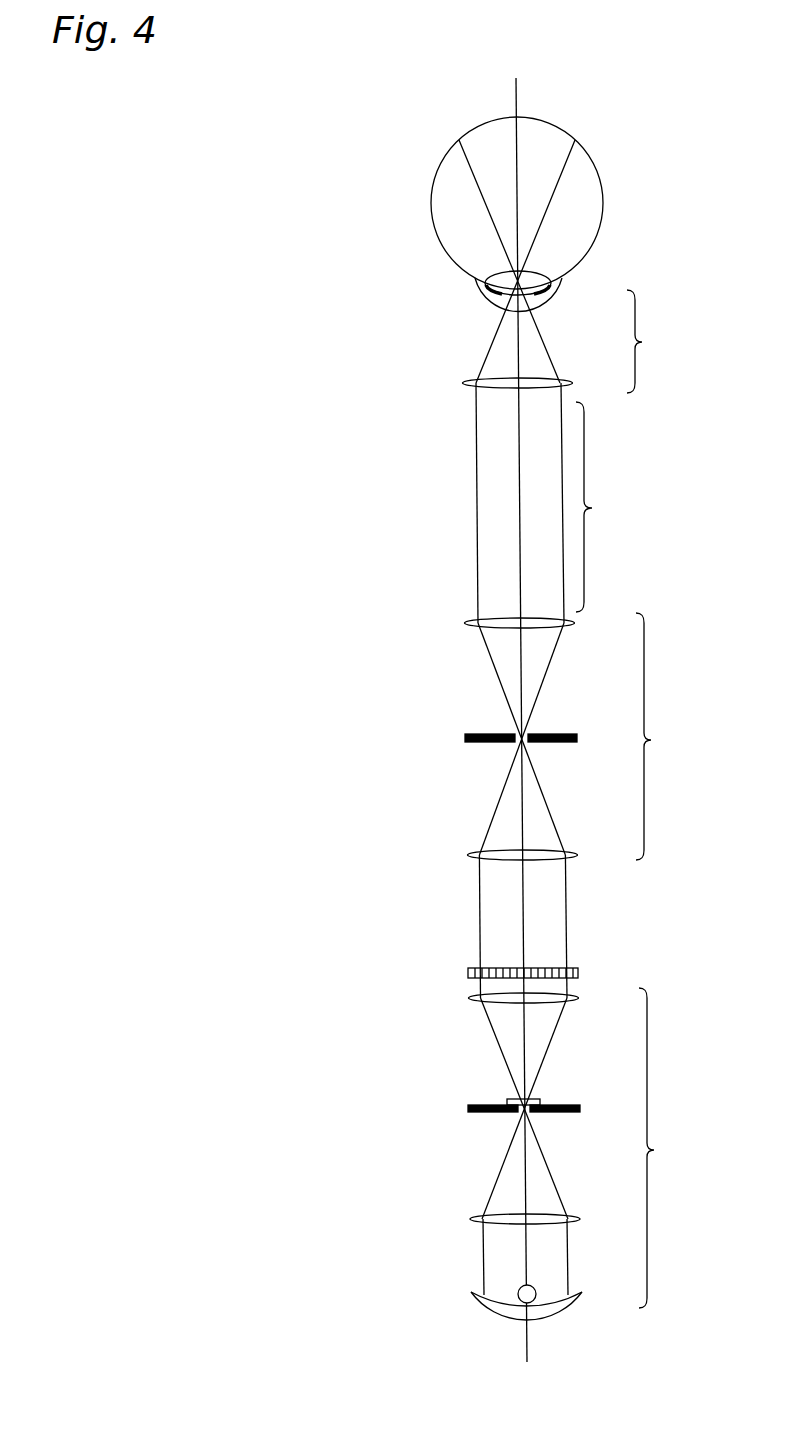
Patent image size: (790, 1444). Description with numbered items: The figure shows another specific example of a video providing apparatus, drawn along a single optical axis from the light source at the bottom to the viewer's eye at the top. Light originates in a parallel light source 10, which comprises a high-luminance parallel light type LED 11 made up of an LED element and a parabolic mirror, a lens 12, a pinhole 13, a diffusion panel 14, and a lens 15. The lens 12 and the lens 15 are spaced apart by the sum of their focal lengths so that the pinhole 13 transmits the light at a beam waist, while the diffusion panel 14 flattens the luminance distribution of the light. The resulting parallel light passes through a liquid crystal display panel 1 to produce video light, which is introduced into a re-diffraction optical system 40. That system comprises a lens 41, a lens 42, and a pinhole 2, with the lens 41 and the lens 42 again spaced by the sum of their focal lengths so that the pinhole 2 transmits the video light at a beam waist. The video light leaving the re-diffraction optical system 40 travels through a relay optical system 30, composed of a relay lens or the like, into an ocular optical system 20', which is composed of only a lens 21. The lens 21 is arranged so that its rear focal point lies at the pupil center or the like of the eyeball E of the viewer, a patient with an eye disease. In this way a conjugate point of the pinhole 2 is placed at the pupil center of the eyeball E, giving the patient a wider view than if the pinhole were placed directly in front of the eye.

The eyeball E is at (601, 205).
The ocular optical system 20' is at (654, 341).
The lens 21 is at (574, 382).
The relay optical system 30 is at (550, 503).
The re-diffraction optical system 40 is at (581, 736).
The lens 42 is at (575, 622).
The lens 41 is at (578, 853).
The pinhole 2 is at (578, 738).
The liquid crystal display panel 1 is at (579, 972).
The parallel light source 10 is at (584, 1148).
The lens 15 is at (579, 997).
The diffusion panel 14 is at (540, 1100).
The pinhole 13 is at (581, 1108).
The lens 12 is at (581, 1218).
The parallel light type LED 11 is at (582, 1297).